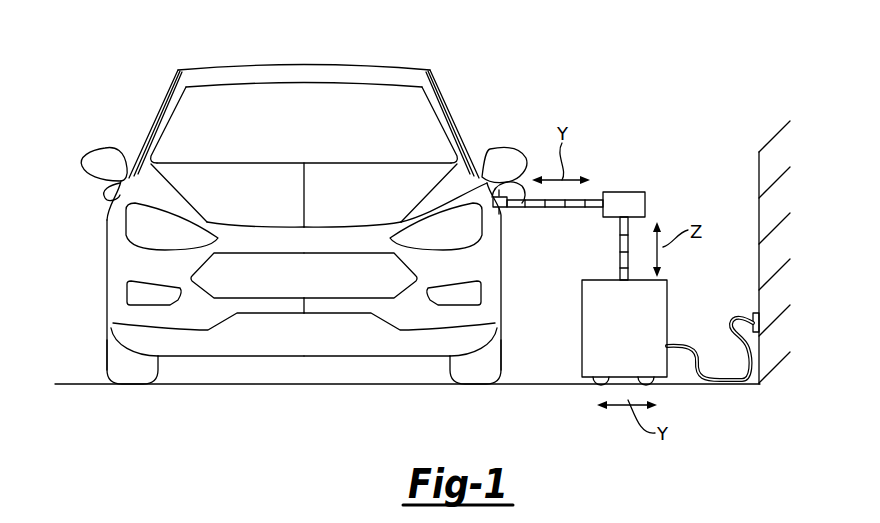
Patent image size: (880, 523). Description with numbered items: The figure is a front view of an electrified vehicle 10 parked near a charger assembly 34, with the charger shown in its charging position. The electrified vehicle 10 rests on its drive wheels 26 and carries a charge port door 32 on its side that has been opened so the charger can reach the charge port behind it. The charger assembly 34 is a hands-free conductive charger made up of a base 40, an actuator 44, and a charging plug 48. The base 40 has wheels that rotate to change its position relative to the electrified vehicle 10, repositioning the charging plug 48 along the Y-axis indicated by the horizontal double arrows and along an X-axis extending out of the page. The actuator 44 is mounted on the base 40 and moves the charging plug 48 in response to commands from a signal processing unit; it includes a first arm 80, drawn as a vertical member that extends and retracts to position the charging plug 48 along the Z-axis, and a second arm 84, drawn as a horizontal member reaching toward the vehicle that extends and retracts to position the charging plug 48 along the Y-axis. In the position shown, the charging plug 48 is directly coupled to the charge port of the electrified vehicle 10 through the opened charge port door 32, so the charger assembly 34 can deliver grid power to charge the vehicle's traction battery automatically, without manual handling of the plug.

The electrified vehicle 10 is at (307, 223).
The drive wheels 26 is at (471, 375).
The charge port door 32 is at (502, 212).
The charger assembly 34 is at (623, 264).
The base 40 is at (582, 333).
The actuator 44 is at (645, 200).
The charging plug 48 is at (501, 195).
The first arm 80 is at (620, 245).
The second arm 84 is at (556, 208).